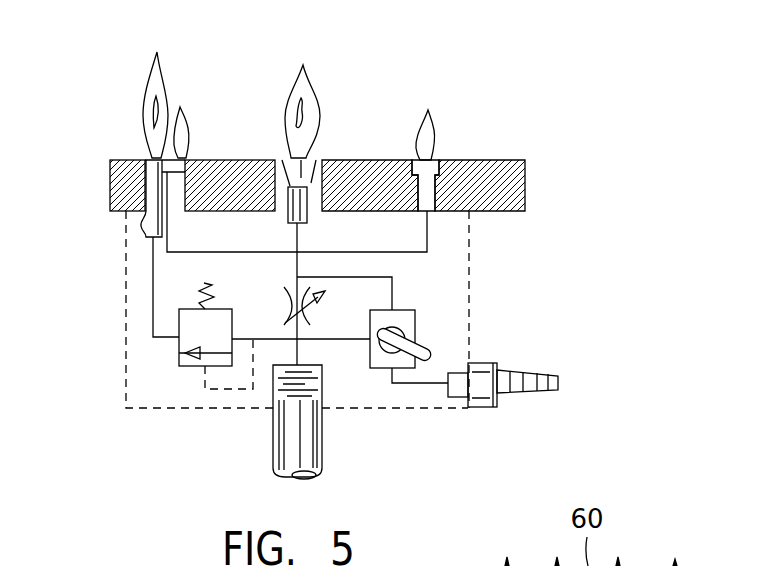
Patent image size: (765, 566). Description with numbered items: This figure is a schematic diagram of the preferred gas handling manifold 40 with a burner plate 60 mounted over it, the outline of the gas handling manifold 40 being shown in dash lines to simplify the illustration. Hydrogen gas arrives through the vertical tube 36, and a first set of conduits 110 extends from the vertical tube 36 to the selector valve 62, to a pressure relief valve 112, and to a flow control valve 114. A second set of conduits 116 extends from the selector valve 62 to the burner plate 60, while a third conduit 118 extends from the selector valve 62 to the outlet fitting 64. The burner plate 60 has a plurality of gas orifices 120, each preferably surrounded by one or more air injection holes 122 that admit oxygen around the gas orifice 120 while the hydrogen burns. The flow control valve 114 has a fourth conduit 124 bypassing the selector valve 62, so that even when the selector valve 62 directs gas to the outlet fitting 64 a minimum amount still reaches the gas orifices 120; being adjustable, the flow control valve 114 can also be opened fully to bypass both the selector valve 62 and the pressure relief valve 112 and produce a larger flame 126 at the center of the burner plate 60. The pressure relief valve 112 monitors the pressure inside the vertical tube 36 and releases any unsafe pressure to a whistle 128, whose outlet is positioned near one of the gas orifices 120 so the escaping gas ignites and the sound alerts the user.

The vertical tube 36 is at (272, 451).
The gas handling manifold 40 is at (472, 254).
The burner plate 60 is at (498, 161).
The selector valve 62 is at (417, 318).
The outlet fitting 64 is at (518, 371).
The first set of conduits 110 is at (298, 351).
The pressure relief valve 112 is at (179, 343).
The flow control valve 114 is at (288, 300).
The second set of conduits 116 is at (393, 290).
The third conduit 118 is at (422, 383).
The gas orifices 120 is at (200, 118).
The air injection holes 122 is at (316, 160).
The fourth conduit 124 is at (297, 266).
The larger flame 126 is at (320, 88).
The whistle 128 is at (152, 194).